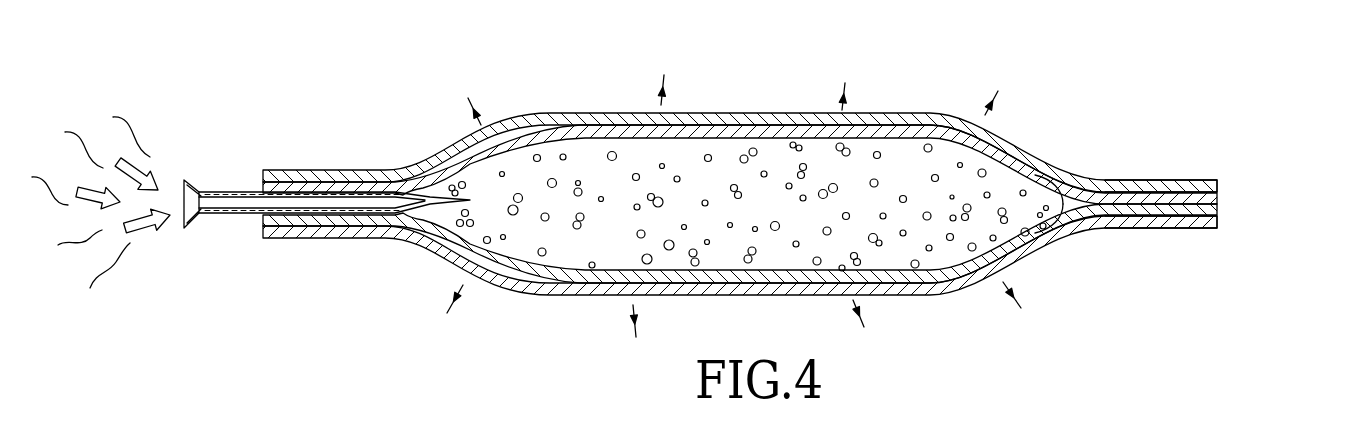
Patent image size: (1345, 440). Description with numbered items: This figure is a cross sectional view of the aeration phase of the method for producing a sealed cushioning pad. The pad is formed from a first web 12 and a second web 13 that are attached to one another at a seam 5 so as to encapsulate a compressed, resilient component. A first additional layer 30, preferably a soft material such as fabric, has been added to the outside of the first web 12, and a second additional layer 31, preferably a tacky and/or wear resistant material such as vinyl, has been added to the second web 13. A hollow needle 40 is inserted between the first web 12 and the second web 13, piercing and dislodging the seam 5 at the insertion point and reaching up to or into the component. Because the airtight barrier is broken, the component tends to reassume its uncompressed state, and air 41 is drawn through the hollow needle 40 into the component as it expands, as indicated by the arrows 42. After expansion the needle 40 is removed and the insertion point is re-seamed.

The seam 5 is at (799, 194).
The first web 12 is at (1222, 190).
The second web 13 is at (1220, 216).
The first additional layer 30 is at (1064, 158).
The second additional layer 31 is at (1083, 233).
The hollow needle 40 is at (215, 192).
The air 41 is at (144, 132).
The arrows 42 is at (470, 99).